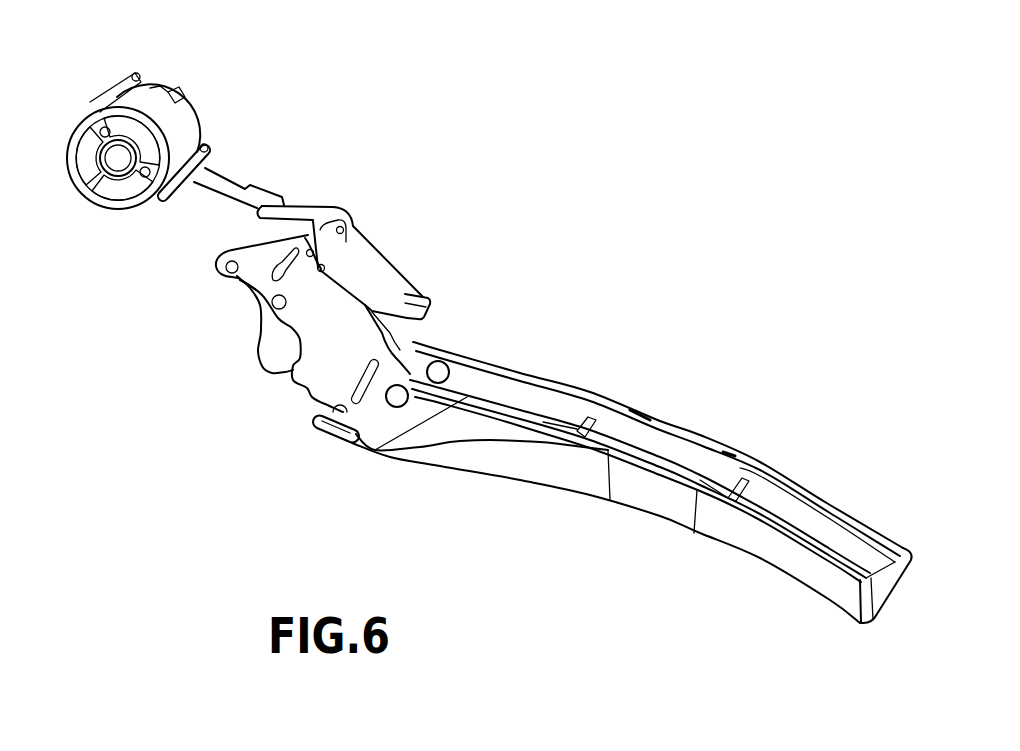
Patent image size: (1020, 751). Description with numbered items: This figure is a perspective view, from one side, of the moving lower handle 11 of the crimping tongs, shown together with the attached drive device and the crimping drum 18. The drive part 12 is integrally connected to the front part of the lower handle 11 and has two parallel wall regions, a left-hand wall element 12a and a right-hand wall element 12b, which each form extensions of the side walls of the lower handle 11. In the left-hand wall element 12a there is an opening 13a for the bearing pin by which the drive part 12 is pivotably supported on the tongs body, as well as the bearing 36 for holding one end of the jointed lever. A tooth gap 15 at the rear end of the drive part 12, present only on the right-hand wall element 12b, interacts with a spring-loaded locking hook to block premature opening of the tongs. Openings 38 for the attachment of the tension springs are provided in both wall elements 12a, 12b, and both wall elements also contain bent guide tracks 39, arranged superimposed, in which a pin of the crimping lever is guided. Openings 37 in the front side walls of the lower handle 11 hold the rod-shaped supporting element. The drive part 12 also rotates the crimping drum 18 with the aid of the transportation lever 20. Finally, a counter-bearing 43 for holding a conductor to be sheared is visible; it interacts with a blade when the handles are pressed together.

The lower handle 11 is at (813, 592).
The drive part 12 is at (384, 244).
The left-hand wall element 12a is at (310, 363).
The right-hand wall element 12b is at (385, 265).
The opening for the bearing pin 13a is at (258, 355).
The tooth gap 15 is at (425, 318).
The crimping drum 18 is at (193, 124).
The transportation lever 20 is at (217, 175).
The bearing 36 is at (228, 282).
The openings 37 is at (437, 384).
The openings for the attachment of the tension springs 38 is at (347, 214).
The bent guide tracks 39 is at (268, 294).
The counter-bearing 43 is at (337, 413).